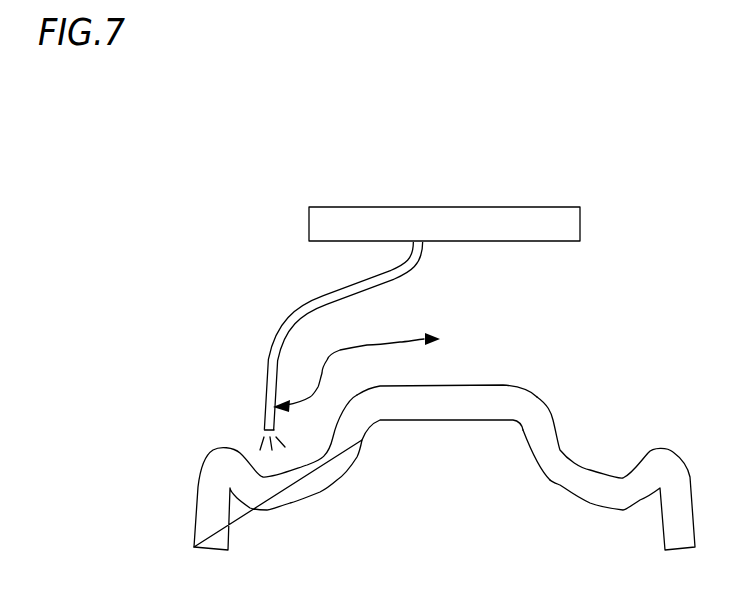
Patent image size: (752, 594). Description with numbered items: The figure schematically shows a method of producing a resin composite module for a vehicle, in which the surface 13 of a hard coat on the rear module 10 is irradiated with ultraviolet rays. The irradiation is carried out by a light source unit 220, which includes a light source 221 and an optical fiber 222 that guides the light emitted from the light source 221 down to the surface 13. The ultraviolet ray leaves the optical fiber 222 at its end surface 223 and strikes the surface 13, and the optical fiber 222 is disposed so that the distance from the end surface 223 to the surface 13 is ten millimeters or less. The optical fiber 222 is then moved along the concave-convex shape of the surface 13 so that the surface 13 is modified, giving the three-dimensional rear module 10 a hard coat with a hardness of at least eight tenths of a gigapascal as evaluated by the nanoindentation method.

The rear module 10 is at (670, 432).
The surface 13 is at (503, 386).
The light source unit 220 is at (366, 286).
The light source 221 is at (365, 207).
The optical fiber 222 is at (293, 319).
The end surface 223 is at (260, 433).